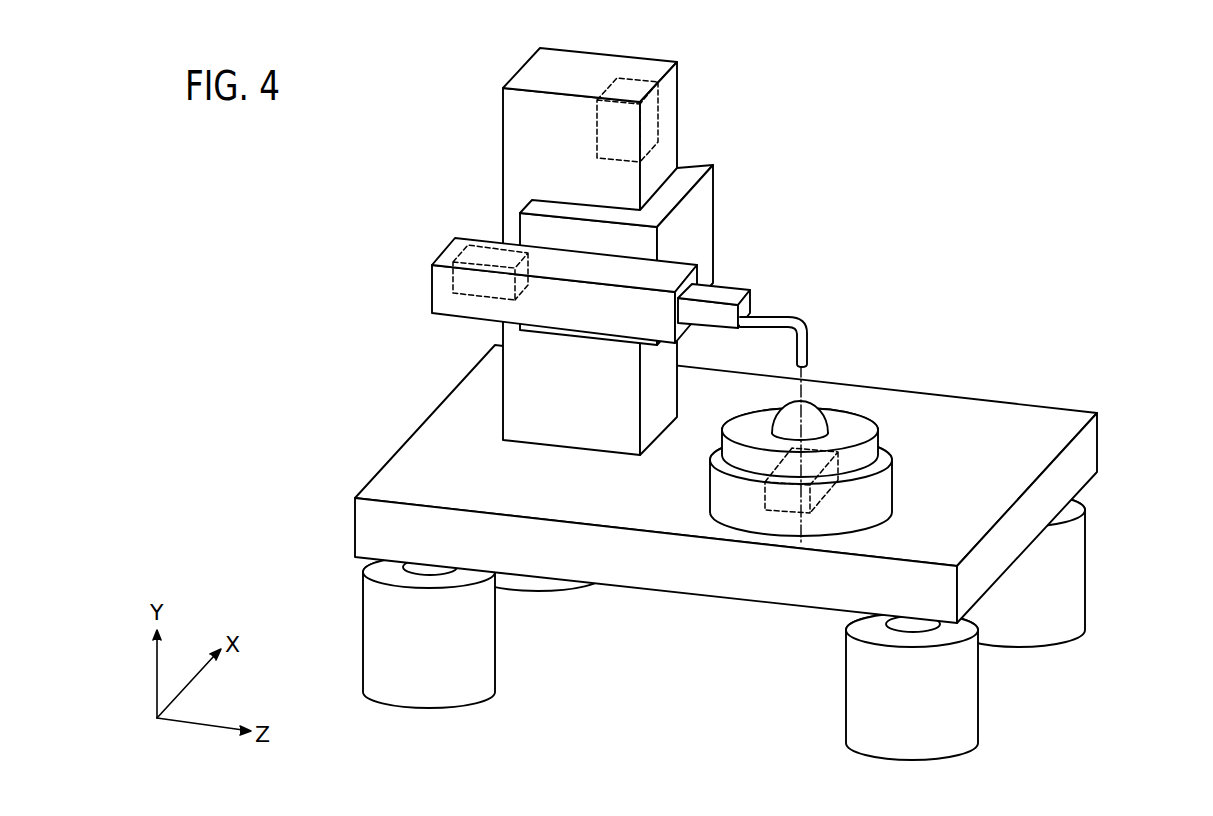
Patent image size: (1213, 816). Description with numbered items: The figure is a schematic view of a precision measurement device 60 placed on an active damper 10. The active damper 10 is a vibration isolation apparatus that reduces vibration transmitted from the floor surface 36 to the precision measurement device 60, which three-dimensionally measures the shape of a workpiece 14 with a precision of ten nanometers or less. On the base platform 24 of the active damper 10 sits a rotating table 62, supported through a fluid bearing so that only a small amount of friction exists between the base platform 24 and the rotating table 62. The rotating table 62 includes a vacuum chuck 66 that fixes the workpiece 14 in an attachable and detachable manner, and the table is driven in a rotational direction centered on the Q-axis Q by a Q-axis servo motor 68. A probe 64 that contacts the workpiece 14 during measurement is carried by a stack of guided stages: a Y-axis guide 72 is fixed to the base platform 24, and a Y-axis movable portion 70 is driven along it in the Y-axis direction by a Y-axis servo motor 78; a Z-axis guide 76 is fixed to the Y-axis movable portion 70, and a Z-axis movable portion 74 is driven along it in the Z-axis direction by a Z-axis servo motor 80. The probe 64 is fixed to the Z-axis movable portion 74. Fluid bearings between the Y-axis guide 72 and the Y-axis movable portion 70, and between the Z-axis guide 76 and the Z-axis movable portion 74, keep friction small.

The active damper 10 is at (771, 399).
The workpiece 14 is at (810, 420).
The base platform 24 is at (990, 413).
The floor surface 36 is at (632, 693).
The precision measurement device 60 is at (625, 237).
The rotating table 62 is at (880, 480).
The probe 64 is at (765, 325).
The vacuum chuck 66 is at (870, 447).
The Q-axis servo motor 68 is at (823, 490).
The Y-axis movable portion 70 is at (690, 168).
The Y-axis guide 72 is at (535, 65).
The Z-axis movable portion 74 is at (720, 292).
The Z-axis guide 76 is at (567, 315).
The Y-axis servo motor 78 is at (630, 75).
The Z-axis servo motor 80 is at (458, 250).
The Q-axis Q is at (806, 372).